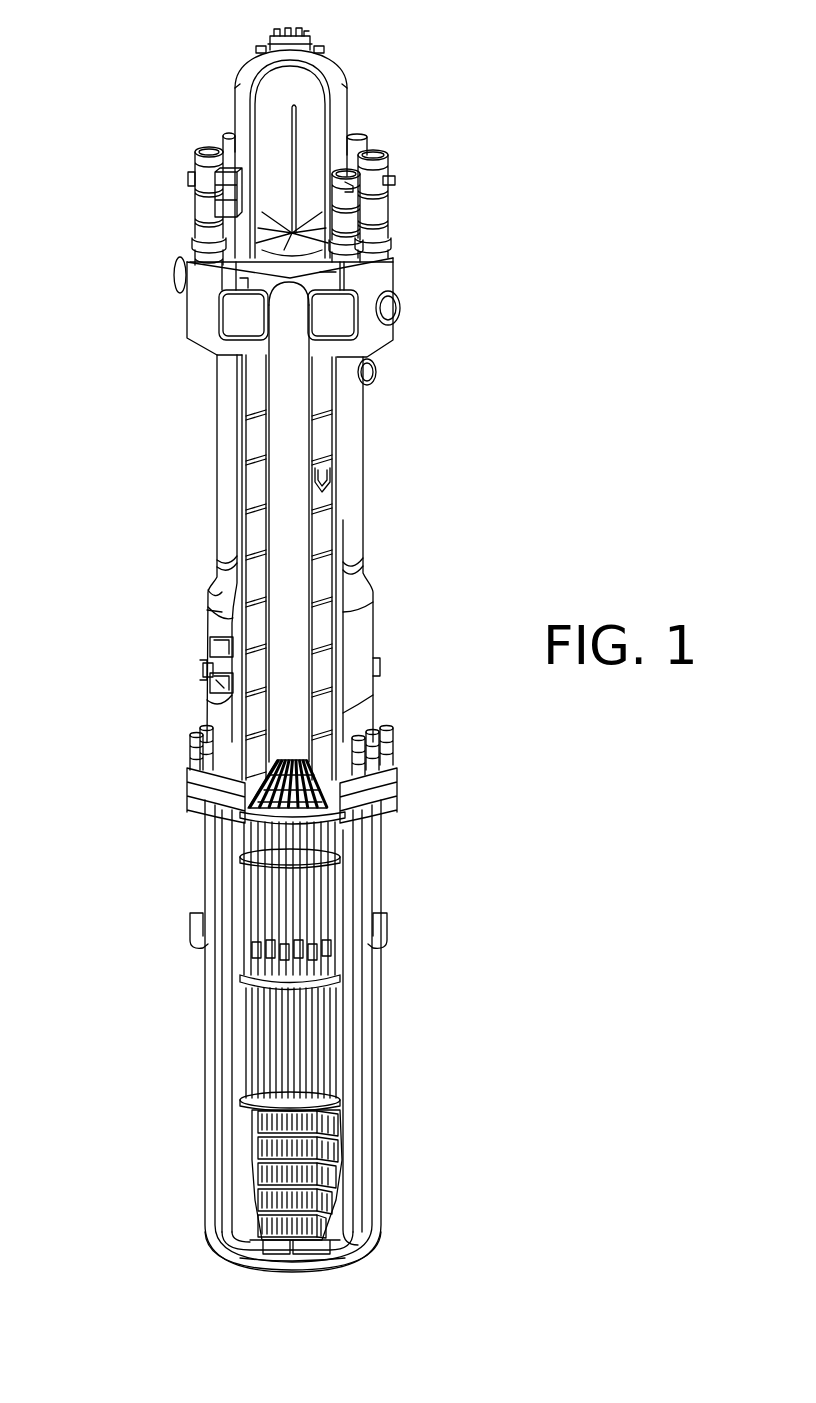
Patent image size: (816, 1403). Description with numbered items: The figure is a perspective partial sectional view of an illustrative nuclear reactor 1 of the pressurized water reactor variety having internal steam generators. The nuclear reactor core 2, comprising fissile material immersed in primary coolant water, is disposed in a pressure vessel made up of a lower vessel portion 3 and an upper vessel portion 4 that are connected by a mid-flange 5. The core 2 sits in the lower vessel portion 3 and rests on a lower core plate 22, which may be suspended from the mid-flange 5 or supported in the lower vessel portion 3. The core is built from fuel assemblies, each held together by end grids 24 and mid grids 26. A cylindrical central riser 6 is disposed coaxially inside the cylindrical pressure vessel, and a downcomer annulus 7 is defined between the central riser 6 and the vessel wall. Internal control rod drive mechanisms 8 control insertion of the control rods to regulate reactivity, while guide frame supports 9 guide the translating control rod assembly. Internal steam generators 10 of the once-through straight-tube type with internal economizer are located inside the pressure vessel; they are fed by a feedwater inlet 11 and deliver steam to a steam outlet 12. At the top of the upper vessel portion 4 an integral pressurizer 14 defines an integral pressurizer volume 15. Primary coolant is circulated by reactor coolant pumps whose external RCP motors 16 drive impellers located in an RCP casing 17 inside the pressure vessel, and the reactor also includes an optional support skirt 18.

The nuclear reactor 1 is at (498, 560).
The nuclear reactor core 2 is at (275, 1170).
The lower vessel portion 3 is at (367, 1068).
The upper vessel portion 4 is at (350, 478).
The mid-flange 5 is at (375, 790).
The central riser 6 is at (303, 427).
The downcomer annulus 7 is at (323, 485).
The internal control rod drive mechanisms 8 is at (273, 913).
The guide frame supports 9 is at (277, 1025).
The internal steam generators 10 is at (252, 447).
The feedwater inlet 11 is at (212, 690).
The steam outlet 12 is at (217, 648).
The integral pressurizer 14 is at (343, 98).
The integral pressurizer volume 15 is at (277, 105).
The external RCP motors 16 is at (388, 177).
The RCP casing 17 is at (343, 315).
The support skirt 18 is at (383, 927).
The lower core plate 22 is at (312, 1249).
The end grids 24 is at (280, 1108).
The mid grids 26 is at (300, 1191).